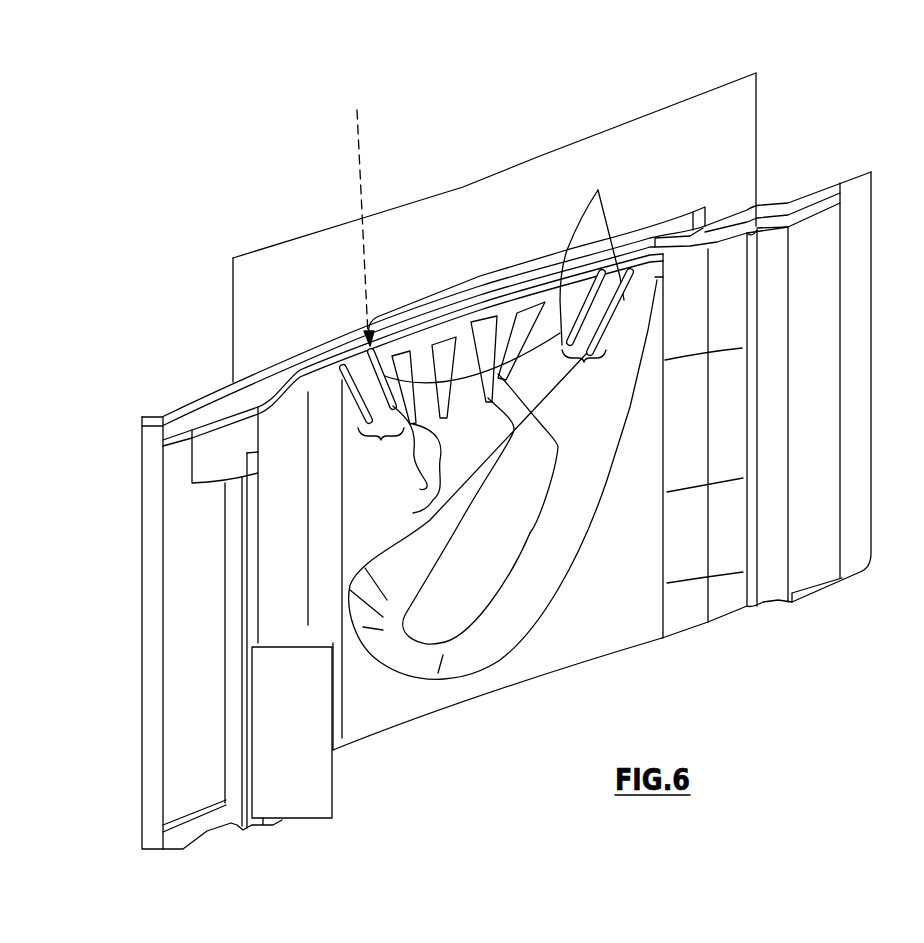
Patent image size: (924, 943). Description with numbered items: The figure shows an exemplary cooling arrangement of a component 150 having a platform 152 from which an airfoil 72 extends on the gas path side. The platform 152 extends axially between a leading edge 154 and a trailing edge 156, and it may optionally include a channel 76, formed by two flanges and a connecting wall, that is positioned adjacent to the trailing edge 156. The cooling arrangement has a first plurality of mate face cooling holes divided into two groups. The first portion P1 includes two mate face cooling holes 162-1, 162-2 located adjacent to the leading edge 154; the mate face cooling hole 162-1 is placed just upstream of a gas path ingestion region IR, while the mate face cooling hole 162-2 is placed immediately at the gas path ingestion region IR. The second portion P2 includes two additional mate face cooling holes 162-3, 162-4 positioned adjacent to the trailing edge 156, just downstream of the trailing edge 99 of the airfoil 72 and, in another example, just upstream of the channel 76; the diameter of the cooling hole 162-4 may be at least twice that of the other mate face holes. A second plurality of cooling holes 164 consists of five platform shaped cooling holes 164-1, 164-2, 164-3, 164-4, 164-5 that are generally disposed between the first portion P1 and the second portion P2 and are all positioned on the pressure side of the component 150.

The component 150 is at (506, 90).
The airfoil 72 is at (668, 122).
The channel 76 is at (700, 208).
The trailing edge 156 is at (826, 150).
The leading edge 154 is at (148, 395).
The platform 152 is at (267, 378).
The second plurality of cooling holes 164 is at (457, 282).
The trailing edge of the airfoil 99 is at (593, 213).
The gas path ingestion region IR is at (362, 163).
The mate face cooling hole 162-1 is at (343, 368).
The mate face cooling hole 162-2 is at (364, 348).
The mate face cooling hole 162-3 is at (594, 270).
The mate face cooling hole 162-4 is at (598, 205).
The platform shaped cooling hole 164-1 is at (420, 489).
The platform shaped cooling hole 164-2 is at (413, 513).
The platform shaped cooling hole 164-3 is at (514, 430).
The platform shaped cooling hole 164-4 is at (558, 447).
The platform shaped cooling hole 164-5 is at (557, 408).
The first portion of the first plurality of cooling holes P1 is at (381, 449).
The second portion of the first plurality of cooling holes P2 is at (584, 363).